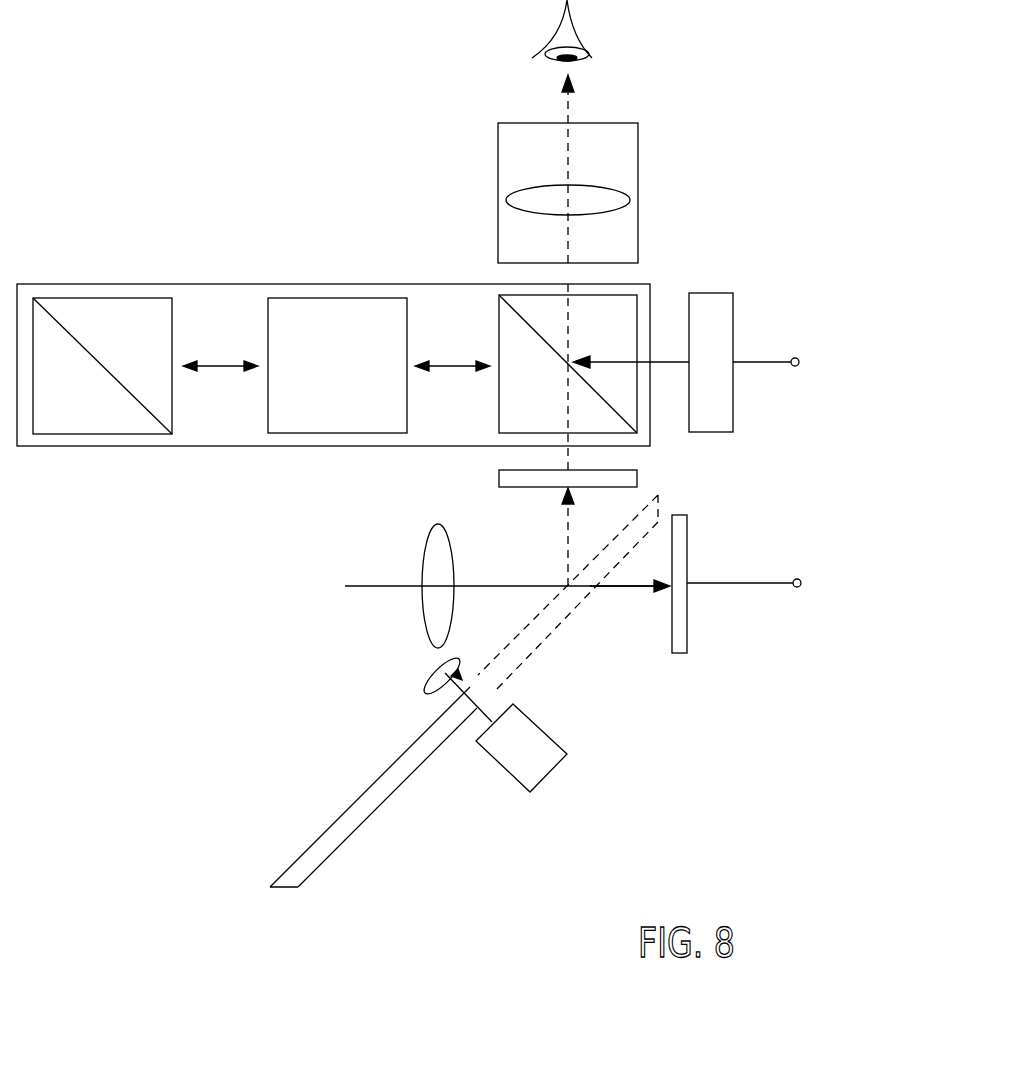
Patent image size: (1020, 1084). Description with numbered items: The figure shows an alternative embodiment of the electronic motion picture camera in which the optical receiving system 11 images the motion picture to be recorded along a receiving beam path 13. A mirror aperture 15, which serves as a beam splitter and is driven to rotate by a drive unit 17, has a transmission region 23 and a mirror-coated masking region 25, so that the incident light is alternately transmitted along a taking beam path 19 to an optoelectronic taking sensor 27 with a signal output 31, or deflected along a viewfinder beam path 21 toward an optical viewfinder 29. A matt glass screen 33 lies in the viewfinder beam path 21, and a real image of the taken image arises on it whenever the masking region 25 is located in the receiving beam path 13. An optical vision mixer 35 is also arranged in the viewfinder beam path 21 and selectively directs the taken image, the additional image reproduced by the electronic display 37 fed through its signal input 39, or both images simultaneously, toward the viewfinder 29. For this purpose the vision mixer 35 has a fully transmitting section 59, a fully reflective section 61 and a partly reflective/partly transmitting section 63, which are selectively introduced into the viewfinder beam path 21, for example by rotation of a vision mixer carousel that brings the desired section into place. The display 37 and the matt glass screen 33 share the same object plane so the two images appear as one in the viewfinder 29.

The optical receiving system 11 is at (422, 555).
The receiving beam path 13 is at (508, 583).
The mirror aperture 15 is at (359, 840).
The drive unit 17 is at (555, 775).
The taking beam path 19 is at (615, 590).
The viewfinder beam path 21 is at (567, 238).
The transmission region 23 is at (538, 637).
The mirror-coated masking region 25 is at (407, 770).
The optoelectronic taking sensor 27 is at (688, 628).
The optical viewfinder 29 is at (638, 148).
The signal output 31 is at (803, 580).
The matt glass screen 33 is at (637, 478).
The optical vision mixer 35 is at (226, 284).
The electronic display 37 is at (733, 312).
The signal input 39 is at (799, 360).
The fully transmitting section 59 is at (327, 297).
The fully reflective section 61 is at (95, 297).
The partly reflective/partly transmitting section 63 is at (497, 323).